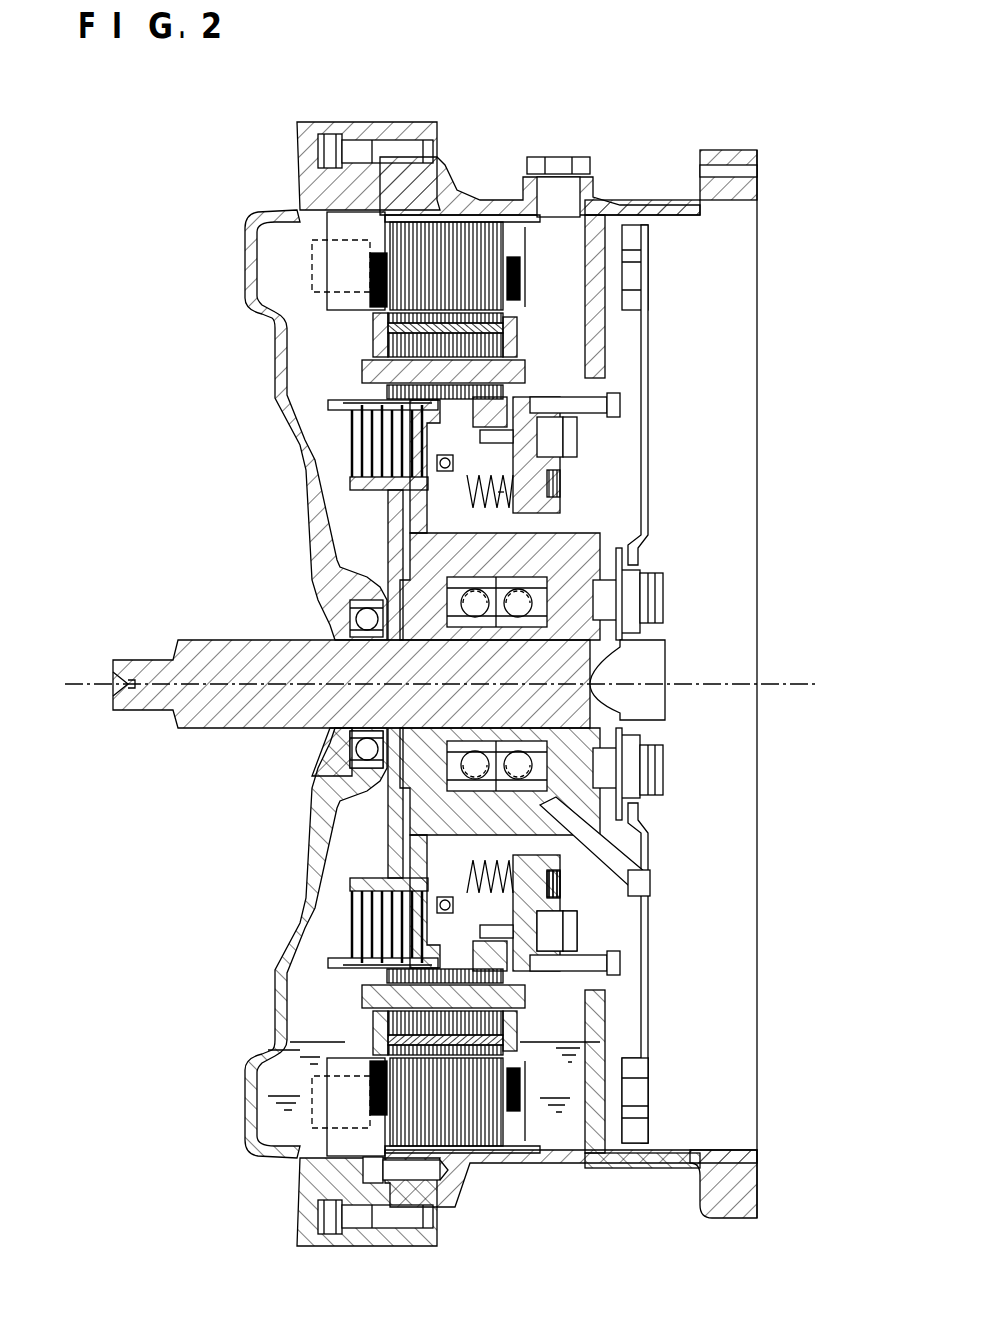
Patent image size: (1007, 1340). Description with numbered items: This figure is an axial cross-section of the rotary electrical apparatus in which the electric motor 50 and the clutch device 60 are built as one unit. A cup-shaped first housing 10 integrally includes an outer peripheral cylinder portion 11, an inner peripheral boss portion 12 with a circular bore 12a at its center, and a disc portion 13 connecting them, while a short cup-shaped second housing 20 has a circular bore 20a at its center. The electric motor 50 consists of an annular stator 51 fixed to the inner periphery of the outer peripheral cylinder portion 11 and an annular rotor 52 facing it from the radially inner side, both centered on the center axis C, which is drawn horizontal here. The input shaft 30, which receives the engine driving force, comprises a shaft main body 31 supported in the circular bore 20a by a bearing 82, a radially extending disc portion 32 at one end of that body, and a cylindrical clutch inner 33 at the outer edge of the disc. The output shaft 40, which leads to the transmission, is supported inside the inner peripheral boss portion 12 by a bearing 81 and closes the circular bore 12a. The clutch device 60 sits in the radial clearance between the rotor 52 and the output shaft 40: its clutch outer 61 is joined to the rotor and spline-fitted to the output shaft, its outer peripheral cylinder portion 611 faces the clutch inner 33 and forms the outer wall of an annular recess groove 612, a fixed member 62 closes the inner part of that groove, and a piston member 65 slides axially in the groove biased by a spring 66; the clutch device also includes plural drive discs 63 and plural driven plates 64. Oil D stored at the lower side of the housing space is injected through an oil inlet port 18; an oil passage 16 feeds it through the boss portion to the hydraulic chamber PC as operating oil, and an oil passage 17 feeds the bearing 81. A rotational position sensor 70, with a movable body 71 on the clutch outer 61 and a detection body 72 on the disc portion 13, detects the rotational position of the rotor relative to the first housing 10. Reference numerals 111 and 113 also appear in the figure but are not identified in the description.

The first housing 10 is at (405, 120).
The outer peripheral cylinder portion 11 is at (470, 205).
The oil inlet port 18 is at (548, 178).
The cover plate 111 is at (585, 240).
The second housing 20 is at (245, 285).
The stator 51 is at (480, 252).
The rotor 52 is at (520, 340).
The electric motor 50 is at (800, 243).
The disc portion 13 is at (600, 362).
The outer peripheral cylinder portion 611 is at (545, 396).
The annular recess groove 612 is at (540, 414).
The clutch outer 61 is at (545, 432).
The piston member 65 is at (495, 455).
The spring 66 is at (480, 480).
The hydraulic chamber PC is at (504, 493).
The fixed member 62 is at (512, 548).
The oil passage 17 is at (620, 556).
The inner peripheral boss portion 12 is at (655, 582).
The circular bore 12a is at (628, 630).
The bearing 81 is at (545, 657).
The output shaft 40 is at (570, 700).
The oil passage 16 is at (590, 855).
The movable body 71 is at (565, 882).
The detection body 72 is at (565, 938).
The rotational position sensor 70 is at (820, 882).
The sensor 113 is at (620, 1102).
The clutch device 60 is at (345, 392).
The driven plates 64 is at (390, 430).
The drive discs 63 is at (383, 480).
The clutch inner 33 is at (405, 512).
The disc portion 32 is at (425, 540).
The shaft main body 31 is at (250, 665).
The input shaft 30 is at (172, 515).
The center axis C is at (90, 680).
The circular bore 20a is at (315, 750).
The bearing 82 is at (310, 780).
The oil D is at (345, 1048).